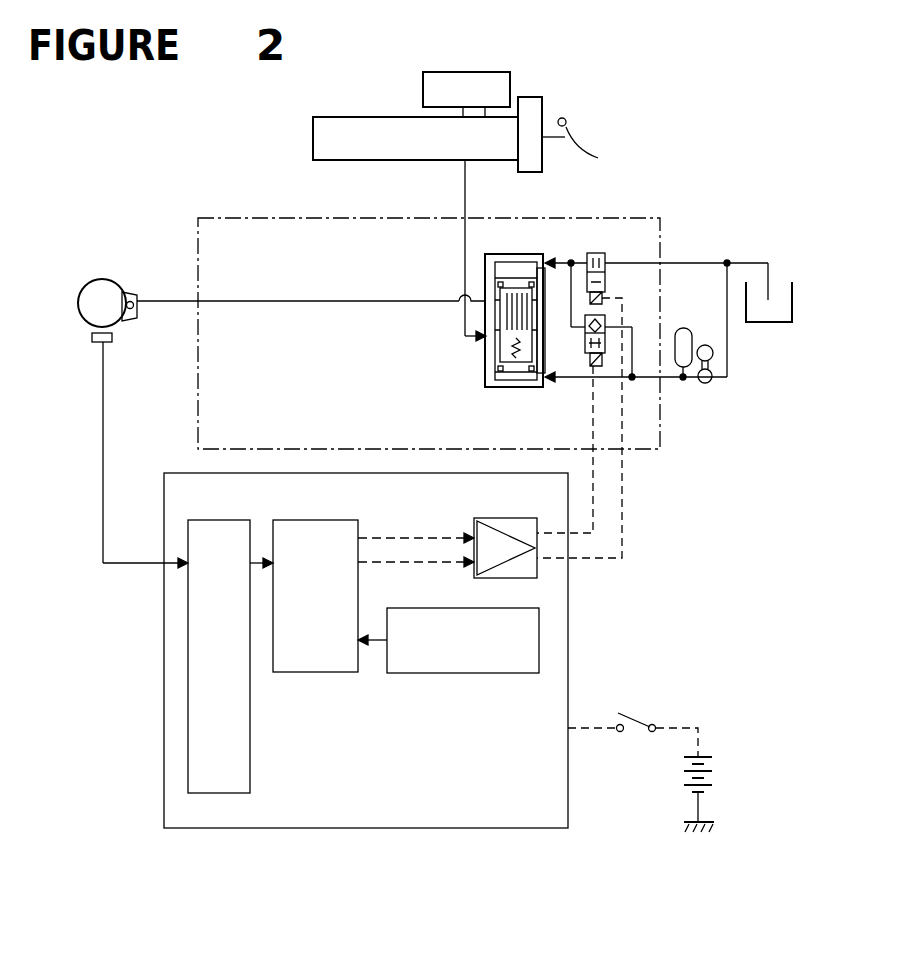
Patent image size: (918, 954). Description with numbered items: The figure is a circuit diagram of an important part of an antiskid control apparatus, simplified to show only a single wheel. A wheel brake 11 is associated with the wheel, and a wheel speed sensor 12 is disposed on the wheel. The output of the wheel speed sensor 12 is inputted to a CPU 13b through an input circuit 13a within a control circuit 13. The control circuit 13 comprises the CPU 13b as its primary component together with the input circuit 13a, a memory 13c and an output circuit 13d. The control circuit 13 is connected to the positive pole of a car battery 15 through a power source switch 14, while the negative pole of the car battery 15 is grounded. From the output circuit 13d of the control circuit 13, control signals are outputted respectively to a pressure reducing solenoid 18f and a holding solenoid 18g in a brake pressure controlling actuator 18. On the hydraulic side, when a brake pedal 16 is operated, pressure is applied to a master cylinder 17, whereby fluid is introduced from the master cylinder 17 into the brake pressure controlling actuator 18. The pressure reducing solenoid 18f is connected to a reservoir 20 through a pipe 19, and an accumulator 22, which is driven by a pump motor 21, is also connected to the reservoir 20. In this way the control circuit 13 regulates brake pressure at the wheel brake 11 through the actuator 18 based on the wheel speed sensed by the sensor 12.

The wheel brake 11 is at (118, 284).
The wheel speed sensor 12 is at (108, 343).
The control circuit 13 is at (569, 599).
The input circuit 13a is at (212, 793).
The CPU 13b is at (306, 672).
The memory 13c is at (443, 673).
The output circuit 13d is at (537, 527).
The power source switch 14 is at (632, 715).
The car battery 15 is at (718, 770).
The brake pedal 16 is at (597, 150).
The master cylinder 17 is at (428, 160).
The brake pressure controlling actuator 18 is at (536, 217).
The pressure reducing solenoid 18f is at (598, 253).
The holding solenoid 18g is at (606, 340).
The pipe 19 is at (690, 262).
The reservoir 20 is at (793, 303).
The pump motor 21 is at (712, 383).
The accumulator 22 is at (686, 328).